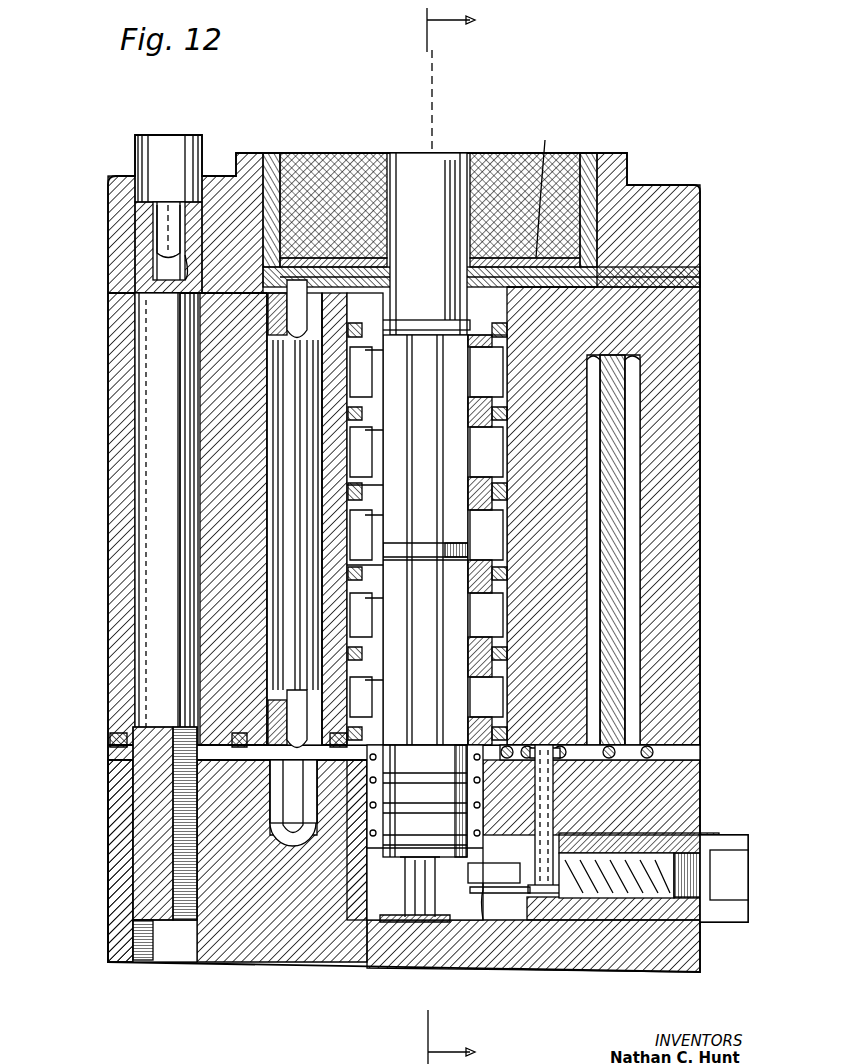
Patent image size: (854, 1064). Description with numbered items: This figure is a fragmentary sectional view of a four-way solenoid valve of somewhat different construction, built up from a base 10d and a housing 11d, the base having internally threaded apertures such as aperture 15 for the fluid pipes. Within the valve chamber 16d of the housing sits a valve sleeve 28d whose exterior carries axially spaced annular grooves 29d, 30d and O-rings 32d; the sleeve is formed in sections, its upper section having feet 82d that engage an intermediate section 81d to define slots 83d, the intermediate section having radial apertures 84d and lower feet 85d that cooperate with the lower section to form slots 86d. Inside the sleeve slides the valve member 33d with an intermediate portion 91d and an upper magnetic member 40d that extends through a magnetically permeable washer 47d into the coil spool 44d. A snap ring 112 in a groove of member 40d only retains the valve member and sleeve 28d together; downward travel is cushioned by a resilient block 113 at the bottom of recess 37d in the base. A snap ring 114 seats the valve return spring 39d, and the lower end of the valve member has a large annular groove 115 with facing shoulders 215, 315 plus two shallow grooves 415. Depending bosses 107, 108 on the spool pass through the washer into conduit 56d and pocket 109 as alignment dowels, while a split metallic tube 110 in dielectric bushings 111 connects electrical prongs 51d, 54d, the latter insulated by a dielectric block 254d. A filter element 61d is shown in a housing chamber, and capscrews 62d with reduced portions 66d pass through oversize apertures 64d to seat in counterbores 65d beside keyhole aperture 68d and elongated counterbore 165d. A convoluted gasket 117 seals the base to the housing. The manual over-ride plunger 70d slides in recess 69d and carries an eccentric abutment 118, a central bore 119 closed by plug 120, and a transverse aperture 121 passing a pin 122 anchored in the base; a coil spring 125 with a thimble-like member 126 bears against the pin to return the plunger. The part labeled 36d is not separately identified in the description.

The base 10d is at (96, 888).
The housing 11d is at (711, 669).
The internally threaded aperture 15 is at (451, 536).
The valve chamber 16d is at (480, 440).
The valve sleeve 28d is at (490, 552).
The annular groove 29d is at (625, 332).
The annular groove 30d is at (355, 372).
The O-ring 32d is at (352, 414).
The valve member 33d is at (520, 370).
The piston rod 36d is at (300, 452).
The recess 37d is at (300, 845).
The valve return spring 39d is at (365, 830).
The magnetic member 40d is at (432, 165).
The coil spool 44d is at (395, 180).
The washer 47d is at (543, 187).
The electrical prong 51d is at (275, 310).
The prong 54d is at (275, 720).
The conduit 56d is at (470, 470).
The filter element 61d is at (610, 300).
The capscrew 62d is at (150, 602).
The oversize aperture 64d is at (150, 512).
The counterbore 65d is at (150, 195).
The reduced diameter portion 66d is at (160, 218).
The keyhole aperture 68d is at (162, 235).
The recess 69d is at (510, 905).
The plunger 70d is at (755, 883).
The intermediate sleeve section 81d is at (500, 420).
The feet 82d is at (600, 365).
The slot 83d is at (370, 352).
The aperture 84d is at (510, 452).
The feet 85d is at (352, 542).
The slot 86d is at (500, 528).
The intermediate portion 91d is at (383, 556).
The depending boss 107 is at (325, 250).
The depending boss 108 is at (573, 277).
The pocket 109 is at (480, 290).
The split metallic tube 110 is at (285, 490).
The dielectric bushing 111 is at (290, 325).
The snap ring 112 is at (452, 200).
The resilient block 113 is at (470, 895).
The snap ring 114 is at (475, 884).
The annular groove 115 is at (407, 888).
The gasket 117 is at (620, 752).
The abutment 118 is at (513, 862).
The central bore 119 is at (658, 895).
The plug 120 is at (690, 888).
The aperture 121 is at (560, 895).
The pin 122 is at (560, 748).
The coil spring 125 is at (655, 840).
The thimble-like member 126 is at (580, 905).
The elongated counterbore 165d is at (165, 250).
The shoulder 215 is at (425, 801).
The dielectric block 254d is at (180, 768).
The shoulder 315 is at (395, 915).
The shallow annular groove 415 is at (420, 840).